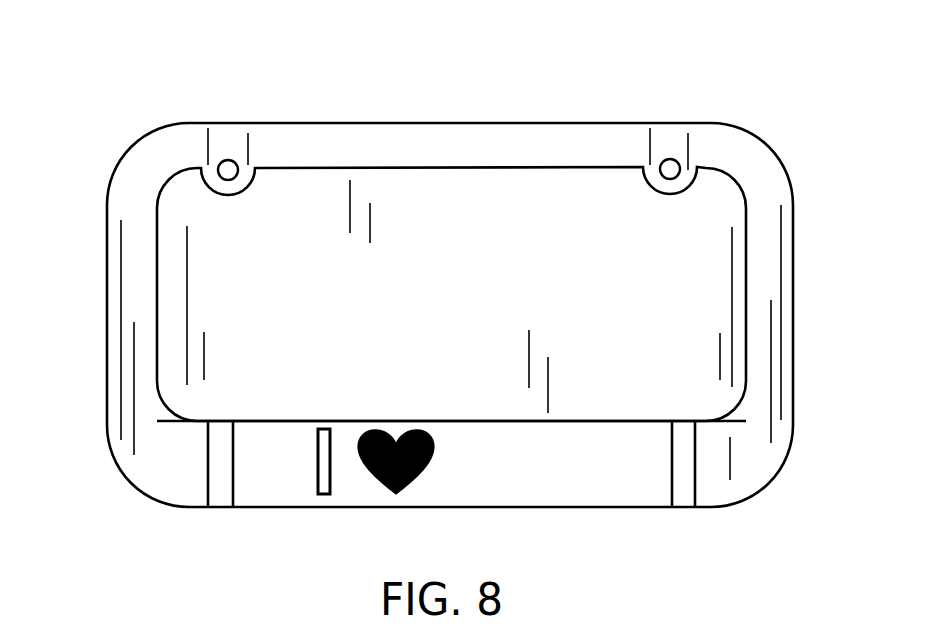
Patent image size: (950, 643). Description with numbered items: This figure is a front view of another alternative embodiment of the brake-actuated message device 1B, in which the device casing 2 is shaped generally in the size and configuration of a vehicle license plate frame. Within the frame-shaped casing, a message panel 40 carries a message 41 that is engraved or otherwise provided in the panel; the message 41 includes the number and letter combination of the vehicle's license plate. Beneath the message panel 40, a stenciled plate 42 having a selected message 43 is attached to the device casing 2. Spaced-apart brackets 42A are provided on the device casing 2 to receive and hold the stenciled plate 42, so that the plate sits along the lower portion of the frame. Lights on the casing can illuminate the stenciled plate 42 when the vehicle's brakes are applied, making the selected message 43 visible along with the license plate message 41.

The brake-actuated message device 1B is at (153, 102).
The device casing 2 is at (108, 250).
The message panel 40 is at (690, 370).
The message 41 is at (697, 243).
The stenciled plate 42 is at (618, 475).
The brackets 42A is at (223, 505).
The selected message 43 is at (528, 497).